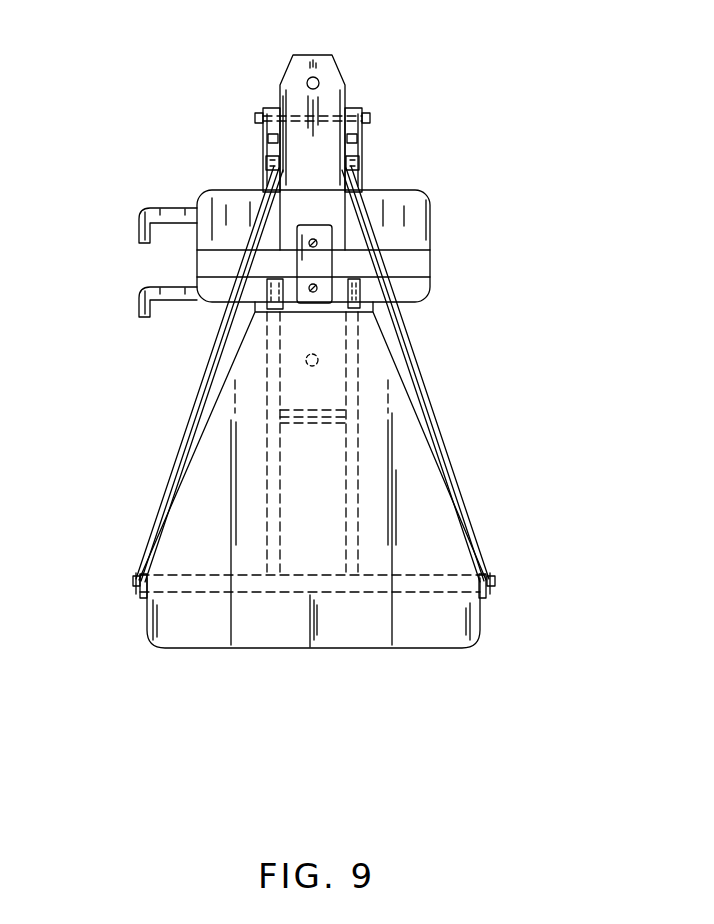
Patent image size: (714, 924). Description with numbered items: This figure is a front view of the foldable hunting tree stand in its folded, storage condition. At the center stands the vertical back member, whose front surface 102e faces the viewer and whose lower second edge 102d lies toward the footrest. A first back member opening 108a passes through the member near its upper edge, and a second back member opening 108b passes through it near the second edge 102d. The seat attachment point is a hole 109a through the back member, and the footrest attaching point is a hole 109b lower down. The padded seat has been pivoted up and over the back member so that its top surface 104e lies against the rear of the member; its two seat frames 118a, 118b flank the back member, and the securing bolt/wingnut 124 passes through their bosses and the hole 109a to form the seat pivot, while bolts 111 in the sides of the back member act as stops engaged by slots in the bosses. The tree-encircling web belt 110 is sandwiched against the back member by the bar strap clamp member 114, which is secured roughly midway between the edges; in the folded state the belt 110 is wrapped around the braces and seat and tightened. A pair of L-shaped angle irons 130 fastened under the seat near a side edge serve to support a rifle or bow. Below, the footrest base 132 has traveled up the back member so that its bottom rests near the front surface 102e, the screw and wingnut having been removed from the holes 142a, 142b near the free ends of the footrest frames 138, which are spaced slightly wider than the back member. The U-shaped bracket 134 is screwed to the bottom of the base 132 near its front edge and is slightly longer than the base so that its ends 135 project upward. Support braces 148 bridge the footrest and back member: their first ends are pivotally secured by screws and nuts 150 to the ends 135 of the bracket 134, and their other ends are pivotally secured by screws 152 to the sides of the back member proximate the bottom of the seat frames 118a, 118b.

The first back member opening 108a is at (331, 73).
The second back member opening 108b is at (318, 354).
The hole 109a is at (325, 117).
The hole 109b is at (323, 415).
The seat frame 118a is at (273, 112).
The seat frame 118b is at (360, 109).
The securing bolt/wingnut 124 is at (262, 118).
The bolts 111 is at (272, 140).
The screws 152 is at (268, 166).
The front surface 102e is at (303, 205).
The top surface 104e is at (385, 203).
The web belt 110 is at (407, 262).
The bar strap clamp member 114 is at (320, 253).
The hole 142a is at (355, 288).
The hole 142b is at (272, 292).
The L-shaped angle irons 130 is at (142, 289).
The second edge 102d is at (307, 423).
The support braces 148 is at (185, 433).
The footrest frames 138 is at (276, 553).
The base 132 is at (458, 637).
The U-shaped bracket 134 is at (205, 583).
The ends 135 is at (147, 607).
The screws and nuts 150 is at (133, 579).